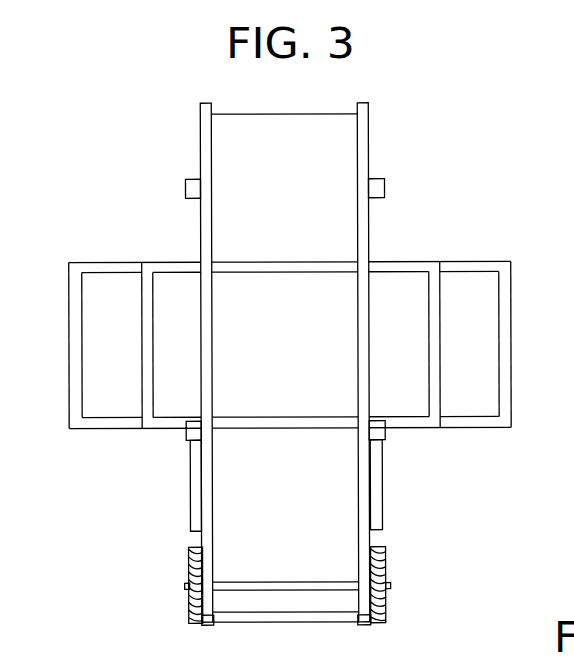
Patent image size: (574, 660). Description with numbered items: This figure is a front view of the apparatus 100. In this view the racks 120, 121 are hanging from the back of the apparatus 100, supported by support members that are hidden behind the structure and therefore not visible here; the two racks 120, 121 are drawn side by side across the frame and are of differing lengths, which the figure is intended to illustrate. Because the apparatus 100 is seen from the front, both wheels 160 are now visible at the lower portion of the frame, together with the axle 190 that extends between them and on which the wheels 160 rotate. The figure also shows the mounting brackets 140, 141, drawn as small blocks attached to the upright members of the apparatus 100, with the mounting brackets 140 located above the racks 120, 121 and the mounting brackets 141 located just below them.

The apparatus 100 is at (150, 100).
The rack 120 is at (102, 262).
The rack 121 is at (165, 262).
The mounting bracket 140 is at (185, 188).
The mounting bracket 141 is at (185, 439).
The wheel 160 is at (185, 577).
The axle 190 is at (318, 582).